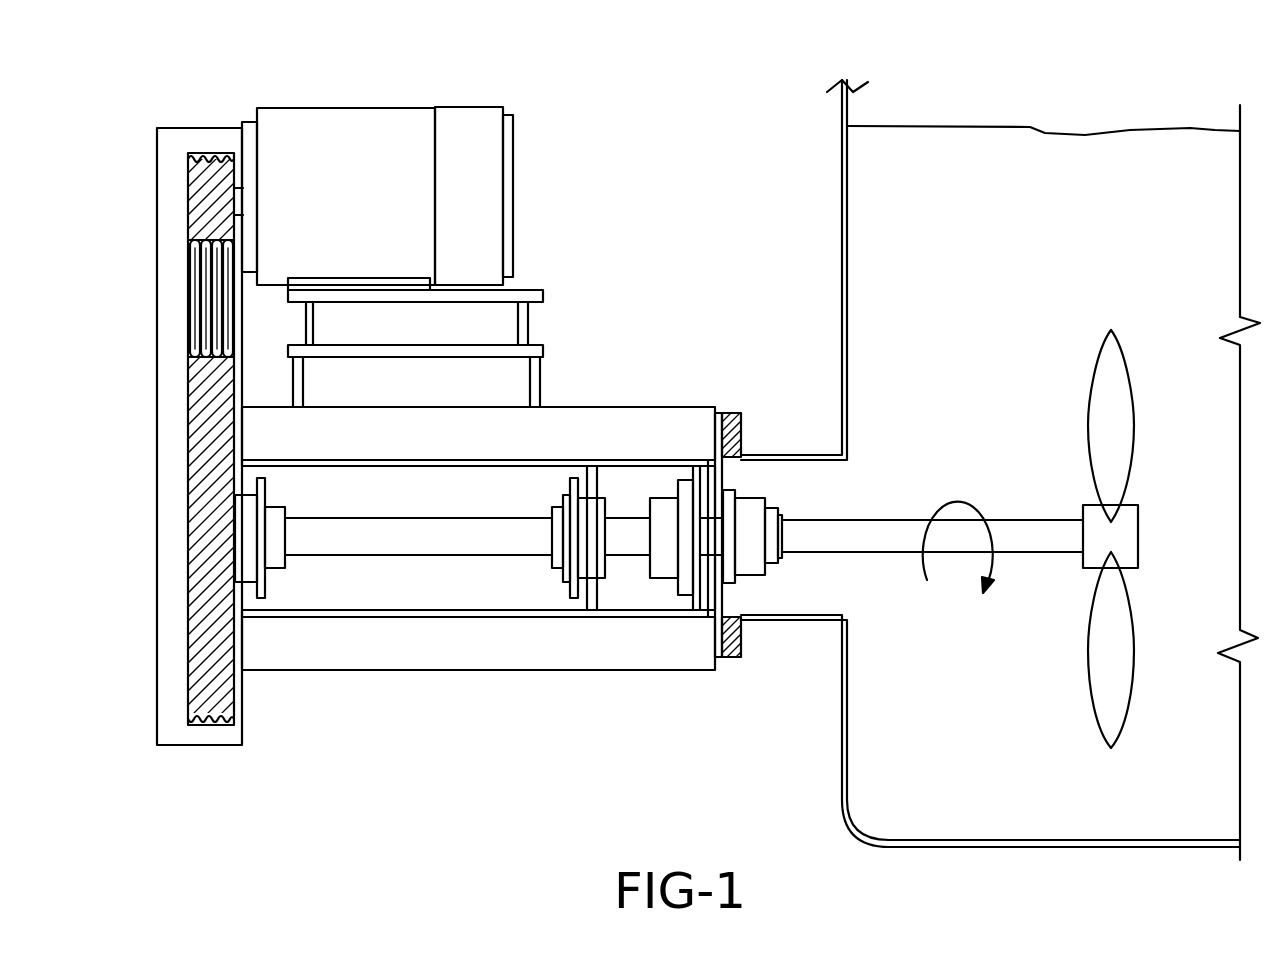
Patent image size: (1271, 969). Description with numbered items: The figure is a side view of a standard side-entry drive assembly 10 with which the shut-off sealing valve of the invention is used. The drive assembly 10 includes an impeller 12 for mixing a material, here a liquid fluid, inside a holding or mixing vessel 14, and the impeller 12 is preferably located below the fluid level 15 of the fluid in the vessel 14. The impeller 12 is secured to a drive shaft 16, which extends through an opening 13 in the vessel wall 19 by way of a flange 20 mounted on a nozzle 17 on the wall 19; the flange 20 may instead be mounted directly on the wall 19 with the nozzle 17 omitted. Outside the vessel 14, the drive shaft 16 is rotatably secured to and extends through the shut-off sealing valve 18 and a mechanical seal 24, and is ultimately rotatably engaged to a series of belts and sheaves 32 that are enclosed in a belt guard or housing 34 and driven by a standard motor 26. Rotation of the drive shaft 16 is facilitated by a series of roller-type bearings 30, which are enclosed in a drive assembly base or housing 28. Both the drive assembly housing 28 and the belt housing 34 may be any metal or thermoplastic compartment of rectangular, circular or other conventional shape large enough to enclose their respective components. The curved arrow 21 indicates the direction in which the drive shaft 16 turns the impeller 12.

The drive assembly 10 is at (450, 688).
The impeller 12 is at (1103, 372).
The opening 13 is at (813, 588).
The vessel 14 is at (842, 210).
The fluid level 15 is at (1072, 132).
The drive shaft 16 is at (1043, 520).
The nozzle 17 is at (805, 620).
The shut-off sealing valve 18 is at (745, 498).
The wall 19 is at (848, 285).
The flange 20 is at (737, 660).
The rotation direction arrow 21 is at (947, 480).
The mechanical seal 24 is at (667, 495).
The motor 26 is at (325, 118).
The drive assembly housing 28 is at (705, 403).
The roller-type bearings 30 is at (602, 508).
The belts and sheaves 32 is at (185, 552).
The belt housing 34 is at (157, 210).